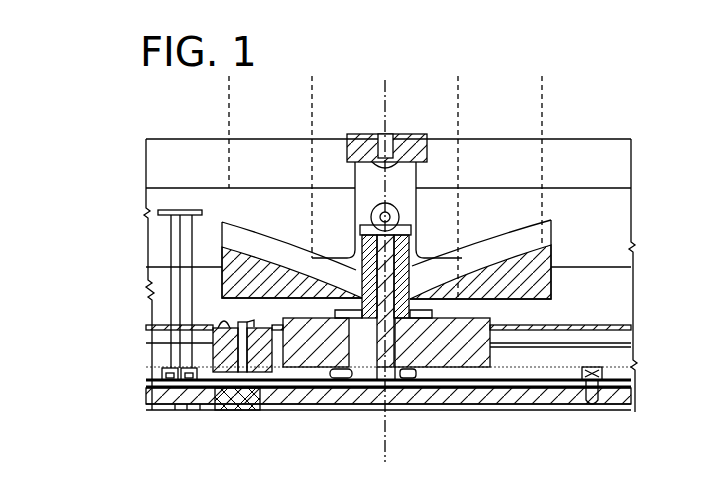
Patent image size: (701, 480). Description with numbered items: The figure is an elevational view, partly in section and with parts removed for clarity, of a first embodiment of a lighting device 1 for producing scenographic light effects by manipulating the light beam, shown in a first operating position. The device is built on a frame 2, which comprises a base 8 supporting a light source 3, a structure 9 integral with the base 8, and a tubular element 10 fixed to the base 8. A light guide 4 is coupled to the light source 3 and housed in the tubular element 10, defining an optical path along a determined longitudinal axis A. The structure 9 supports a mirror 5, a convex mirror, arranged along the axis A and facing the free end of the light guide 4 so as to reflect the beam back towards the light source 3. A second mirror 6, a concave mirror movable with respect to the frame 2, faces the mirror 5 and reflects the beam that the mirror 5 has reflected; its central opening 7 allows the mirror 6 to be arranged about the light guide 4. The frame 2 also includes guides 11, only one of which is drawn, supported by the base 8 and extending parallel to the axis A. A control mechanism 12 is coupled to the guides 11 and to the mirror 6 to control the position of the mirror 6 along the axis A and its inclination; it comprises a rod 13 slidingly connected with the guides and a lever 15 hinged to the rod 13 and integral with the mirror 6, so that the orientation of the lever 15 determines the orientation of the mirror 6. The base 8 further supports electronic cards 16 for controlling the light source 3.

The lighting device 1 is at (520, 116).
The frame 2 is at (118, 382).
The light source 3 is at (376, 393).
The light guide 4 is at (416, 276).
The mirror 5 is at (407, 178).
The mirror 6 is at (504, 256).
The central opening 7 is at (354, 283).
The base 8 is at (501, 396).
The structure 9 is at (398, 132).
The tubular element 10 is at (458, 292).
The guides 11 is at (142, 306).
The control mechanism 12 is at (128, 257).
The rod 13 is at (615, 300).
The lever 15 is at (358, 176).
The electronic cards 16 is at (447, 392).
The axis A is at (383, 425).